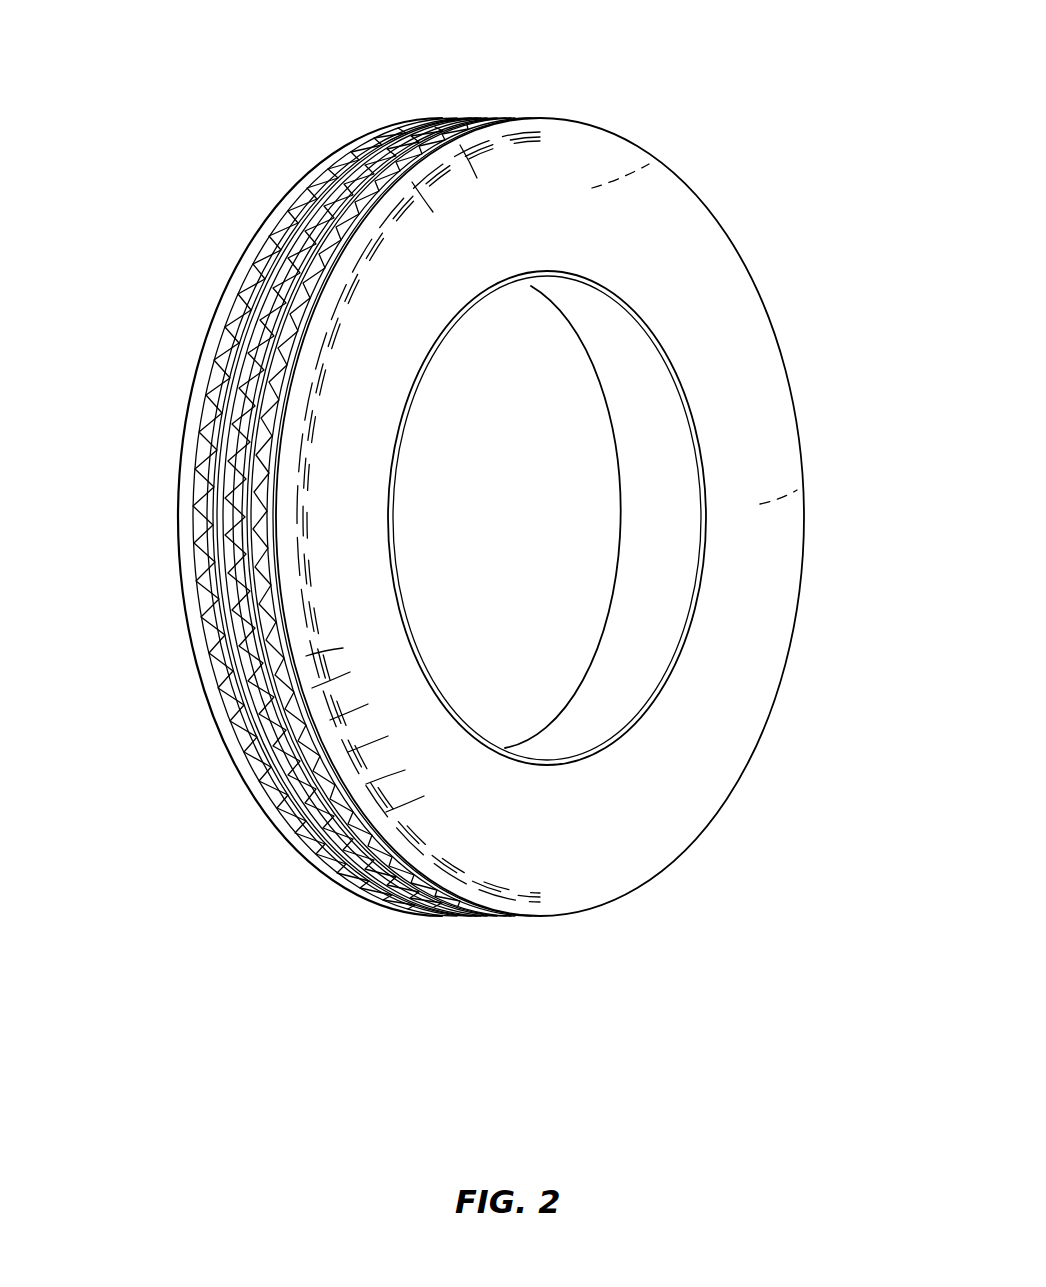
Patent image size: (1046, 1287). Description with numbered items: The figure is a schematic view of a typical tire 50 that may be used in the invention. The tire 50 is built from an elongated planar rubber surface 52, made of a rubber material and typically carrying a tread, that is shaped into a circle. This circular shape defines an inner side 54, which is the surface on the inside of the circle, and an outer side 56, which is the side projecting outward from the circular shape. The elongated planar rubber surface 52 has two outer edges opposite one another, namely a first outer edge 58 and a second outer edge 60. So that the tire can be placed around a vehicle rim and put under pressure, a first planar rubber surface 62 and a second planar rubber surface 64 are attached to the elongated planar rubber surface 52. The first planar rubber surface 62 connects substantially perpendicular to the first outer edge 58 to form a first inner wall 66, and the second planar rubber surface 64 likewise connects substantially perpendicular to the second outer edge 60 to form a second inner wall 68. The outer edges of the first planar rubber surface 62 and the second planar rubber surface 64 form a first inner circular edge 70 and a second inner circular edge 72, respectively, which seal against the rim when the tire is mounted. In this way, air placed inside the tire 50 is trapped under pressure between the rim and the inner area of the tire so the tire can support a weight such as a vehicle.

The tire 50 is at (528, 114).
The elongated planar rubber surface 52 is at (300, 190).
The inner side 54 is at (657, 158).
The outer side 56 is at (220, 512).
The first outer edge 58 is at (179, 592).
The second outer edge 60 is at (305, 648).
The first planar rubber surface 62 is at (520, 844).
The second planar rubber surface 64 is at (279, 823).
The first inner wall 66 is at (663, 447).
The second inner wall 68 is at (803, 488).
The first inner circular edge 70 is at (696, 594).
The second inner circular edge 72 is at (600, 634).